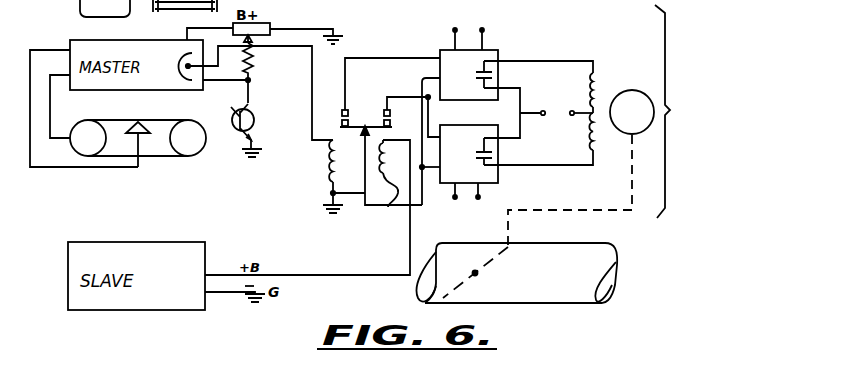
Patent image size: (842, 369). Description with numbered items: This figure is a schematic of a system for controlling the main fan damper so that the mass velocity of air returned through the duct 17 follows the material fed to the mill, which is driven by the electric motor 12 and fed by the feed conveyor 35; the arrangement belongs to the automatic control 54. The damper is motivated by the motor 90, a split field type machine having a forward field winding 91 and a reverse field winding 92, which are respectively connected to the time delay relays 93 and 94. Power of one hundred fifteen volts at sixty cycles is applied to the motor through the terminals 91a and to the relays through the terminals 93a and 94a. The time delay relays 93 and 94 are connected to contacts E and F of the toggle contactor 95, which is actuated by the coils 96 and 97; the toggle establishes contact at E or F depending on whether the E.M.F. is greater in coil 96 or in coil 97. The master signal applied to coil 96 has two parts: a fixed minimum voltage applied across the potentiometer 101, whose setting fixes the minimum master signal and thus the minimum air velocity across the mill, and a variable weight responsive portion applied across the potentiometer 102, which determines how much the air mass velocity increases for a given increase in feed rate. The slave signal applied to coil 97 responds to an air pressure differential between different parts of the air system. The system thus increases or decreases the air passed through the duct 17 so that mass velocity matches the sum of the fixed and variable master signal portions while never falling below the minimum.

The electric motor 12 is at (85, 2).
The duct 17 is at (516, 259).
The feed conveyor 35 is at (163, 157).
The automatic control 54 is at (678, 111).
The motor 90 is at (642, 76).
The forward field winding 91 is at (597, 73).
The terminals 91a is at (559, 103).
The reverse field winding 92 is at (588, 139).
The time delay relay 93 is at (500, 51).
The terminals 93a is at (475, 33).
The time delay relay 94 is at (499, 181).
The terminals 94a is at (470, 206).
The toggle contactor 95 is at (369, 103).
The coil 96 is at (326, 173).
The coil 97 is at (399, 205).
The potentiometer 101 is at (233, 127).
The potentiometer 102 is at (176, 83).